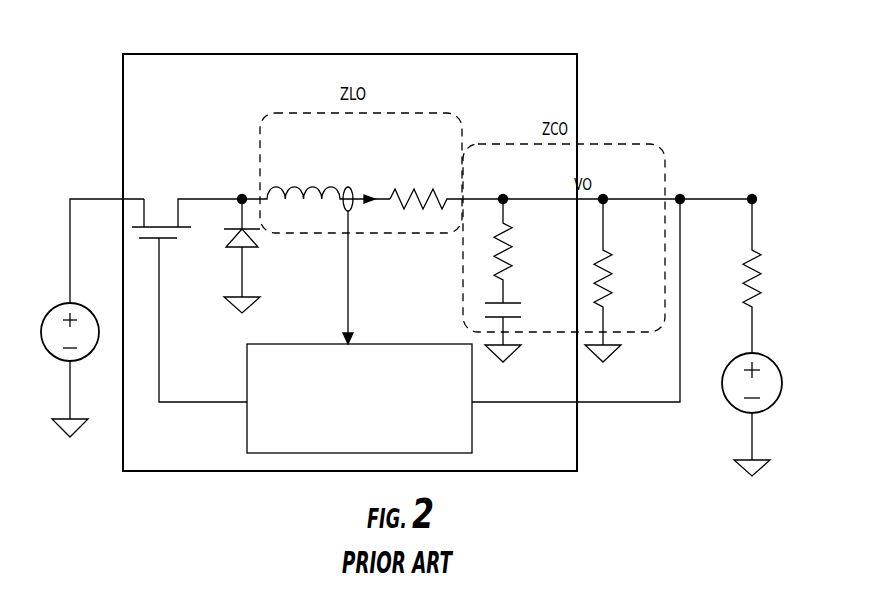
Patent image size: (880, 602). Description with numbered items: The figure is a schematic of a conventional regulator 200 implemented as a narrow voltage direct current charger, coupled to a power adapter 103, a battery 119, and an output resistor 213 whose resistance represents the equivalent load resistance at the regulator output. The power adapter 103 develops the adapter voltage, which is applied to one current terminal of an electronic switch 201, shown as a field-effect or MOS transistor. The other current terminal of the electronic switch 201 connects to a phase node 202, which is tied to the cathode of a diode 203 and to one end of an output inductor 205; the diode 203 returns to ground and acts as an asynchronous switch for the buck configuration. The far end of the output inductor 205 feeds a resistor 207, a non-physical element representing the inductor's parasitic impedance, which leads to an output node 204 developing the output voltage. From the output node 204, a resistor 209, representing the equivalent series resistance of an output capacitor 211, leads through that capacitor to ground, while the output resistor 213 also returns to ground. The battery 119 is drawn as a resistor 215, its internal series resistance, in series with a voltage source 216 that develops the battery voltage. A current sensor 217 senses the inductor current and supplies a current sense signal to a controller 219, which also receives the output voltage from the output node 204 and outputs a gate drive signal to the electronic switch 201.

The power adapter 103 is at (44, 303).
The battery 119 is at (790, 238).
The regulator 200 is at (563, 460).
The electronic switch 201 is at (144, 199).
The phase node 202 is at (242, 199).
The diode 203 is at (257, 240).
The output node 204 is at (730, 199).
The output inductor 205 is at (280, 190).
The resistor 207 is at (425, 192).
The resistor 209 is at (500, 250).
The output capacitor 211 is at (492, 316).
The output resistor 213 is at (603, 266).
The resistor 215 is at (752, 251).
The voltage source 216 is at (735, 408).
The current sensor 217 is at (348, 187).
The controller 219 is at (302, 453).